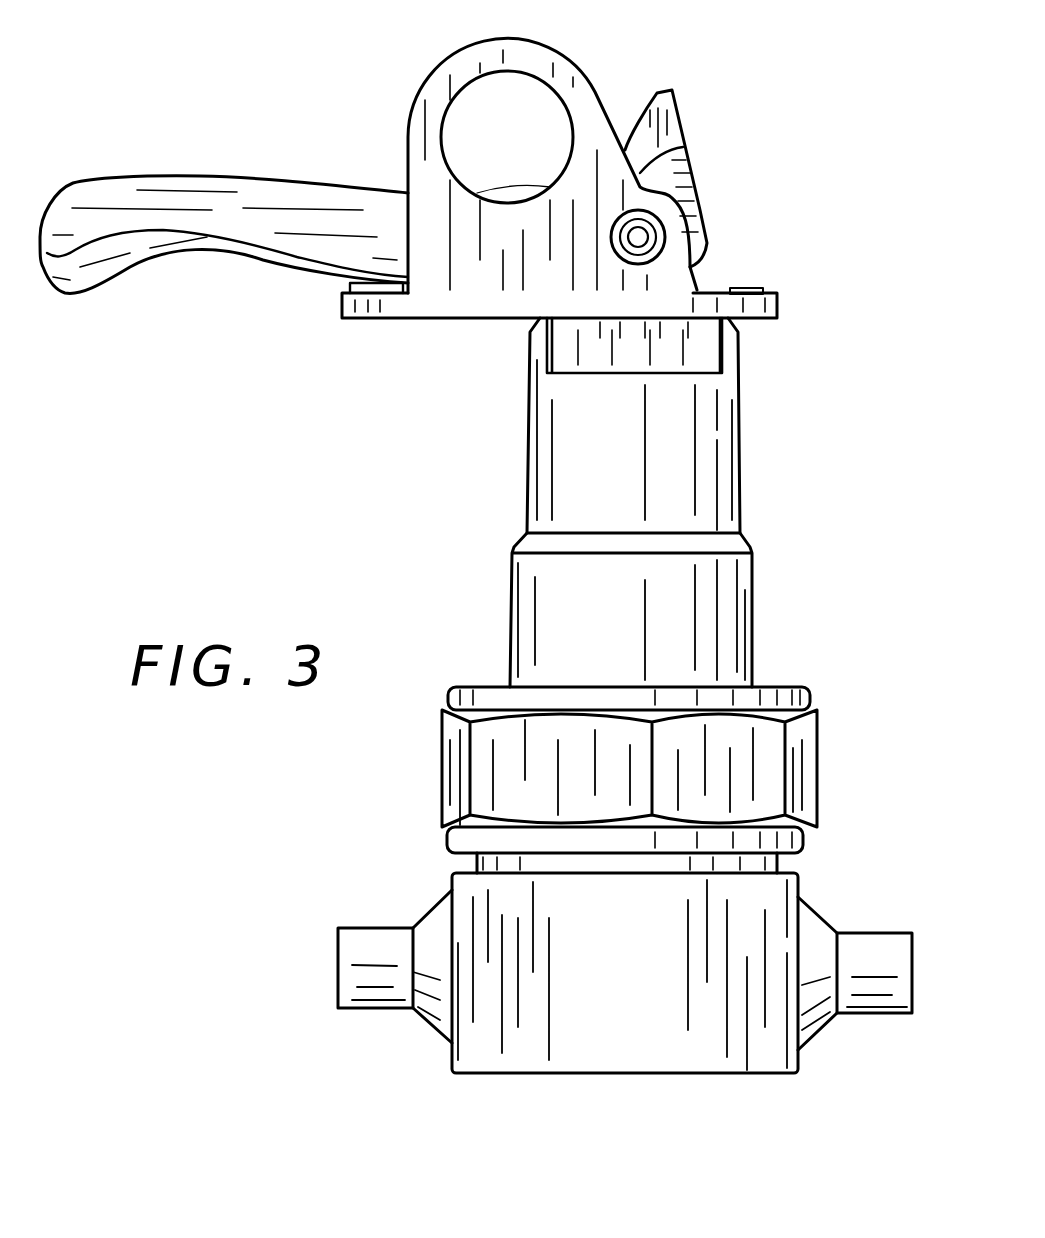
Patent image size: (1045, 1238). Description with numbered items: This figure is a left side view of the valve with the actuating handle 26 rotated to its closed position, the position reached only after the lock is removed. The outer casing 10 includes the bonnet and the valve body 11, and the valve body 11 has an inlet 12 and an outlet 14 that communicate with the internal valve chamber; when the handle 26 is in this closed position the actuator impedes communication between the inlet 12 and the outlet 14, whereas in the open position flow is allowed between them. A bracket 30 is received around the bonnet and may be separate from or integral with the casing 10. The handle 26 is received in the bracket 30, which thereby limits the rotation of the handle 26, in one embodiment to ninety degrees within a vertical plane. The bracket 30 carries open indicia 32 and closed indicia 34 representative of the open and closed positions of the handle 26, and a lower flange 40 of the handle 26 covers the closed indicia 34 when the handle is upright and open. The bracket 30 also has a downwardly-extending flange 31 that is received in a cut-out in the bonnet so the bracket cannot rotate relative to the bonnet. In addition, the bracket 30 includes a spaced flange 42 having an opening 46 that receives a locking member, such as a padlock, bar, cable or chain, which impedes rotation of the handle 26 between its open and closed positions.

The outer casing 10 is at (698, 480).
The valve body 11 is at (623, 1047).
The inlet 12 is at (373, 943).
The outlet 14 is at (877, 947).
The actuating handle 26 is at (177, 200).
The bracket 30 is at (475, 287).
The downwardly-extending flange 31 is at (692, 350).
The open indicia 32 is at (337, 277).
The closed indicia 34 is at (747, 287).
The lower flange 40 is at (672, 123).
The flange 42 is at (540, 56).
The opening 46 is at (483, 125).